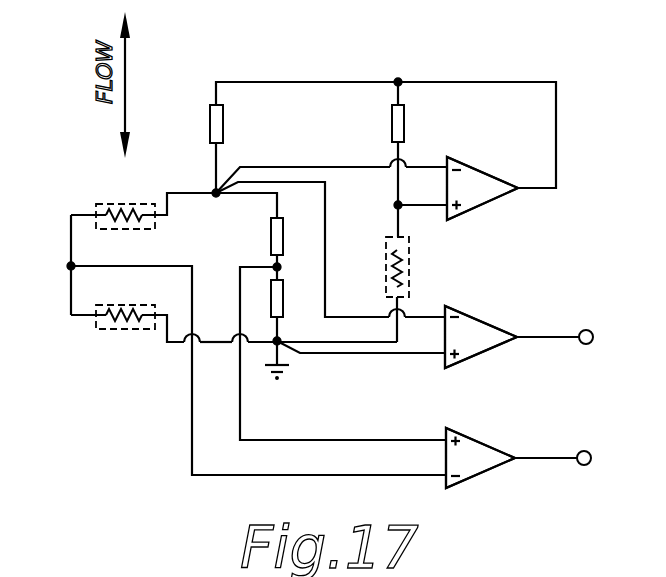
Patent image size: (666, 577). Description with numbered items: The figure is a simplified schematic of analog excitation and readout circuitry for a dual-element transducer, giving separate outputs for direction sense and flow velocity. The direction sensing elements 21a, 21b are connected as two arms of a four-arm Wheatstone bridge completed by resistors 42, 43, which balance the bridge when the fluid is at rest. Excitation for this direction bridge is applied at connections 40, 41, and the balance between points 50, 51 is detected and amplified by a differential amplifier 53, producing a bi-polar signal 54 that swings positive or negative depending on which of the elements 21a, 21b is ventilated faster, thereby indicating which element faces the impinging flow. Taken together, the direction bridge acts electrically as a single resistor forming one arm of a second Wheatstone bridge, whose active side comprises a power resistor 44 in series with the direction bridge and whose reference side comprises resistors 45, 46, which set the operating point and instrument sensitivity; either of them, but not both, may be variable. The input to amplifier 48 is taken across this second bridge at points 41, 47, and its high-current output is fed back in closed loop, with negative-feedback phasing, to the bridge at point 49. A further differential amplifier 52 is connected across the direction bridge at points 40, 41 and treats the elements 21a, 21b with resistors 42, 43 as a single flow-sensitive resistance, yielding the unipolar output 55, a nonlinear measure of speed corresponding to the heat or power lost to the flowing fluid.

The sensing element 21a is at (121, 329).
The sensing element 21b is at (147, 210).
The connection 40 is at (281, 344).
The connection 41 is at (215, 196).
The resistor 42 is at (283, 238).
The resistor 43 is at (283, 306).
The power resistor 44 is at (210, 133).
The resistor 45 is at (404, 128).
The resistor 46 is at (409, 265).
The point 47 is at (397, 207).
The differential amplifier 48 is at (480, 183).
The point 49 is at (398, 82).
The point 50 is at (280, 267).
The point 51 is at (71, 266).
The differential amplifier 52 is at (484, 333).
The differential amplifier 53 is at (478, 454).
The direction sign sense output signal 54 is at (586, 465).
The flow velocity readout signal 55 is at (588, 344).